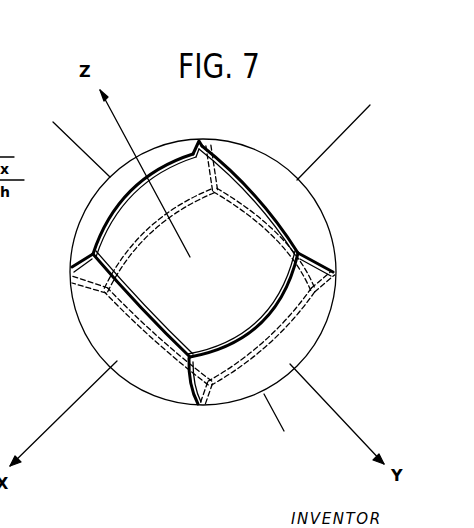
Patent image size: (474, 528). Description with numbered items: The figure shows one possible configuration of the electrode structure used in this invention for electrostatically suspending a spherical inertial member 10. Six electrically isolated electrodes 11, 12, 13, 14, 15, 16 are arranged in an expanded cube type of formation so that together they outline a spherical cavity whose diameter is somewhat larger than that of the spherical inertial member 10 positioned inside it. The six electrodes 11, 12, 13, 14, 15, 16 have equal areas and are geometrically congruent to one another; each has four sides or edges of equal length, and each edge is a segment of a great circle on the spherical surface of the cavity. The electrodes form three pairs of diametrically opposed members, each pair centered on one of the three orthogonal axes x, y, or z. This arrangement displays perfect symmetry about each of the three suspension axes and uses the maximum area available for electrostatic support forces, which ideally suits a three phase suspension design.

The spherical inertial member 10 is at (306, 205).
The electrode 11 is at (87, 329).
The electrode 12 is at (309, 342).
The electrode 13 is at (177, 175).
The electrode 14 is at (257, 160).
The electrode 15 is at (95, 208).
The electrode 16 is at (230, 358).